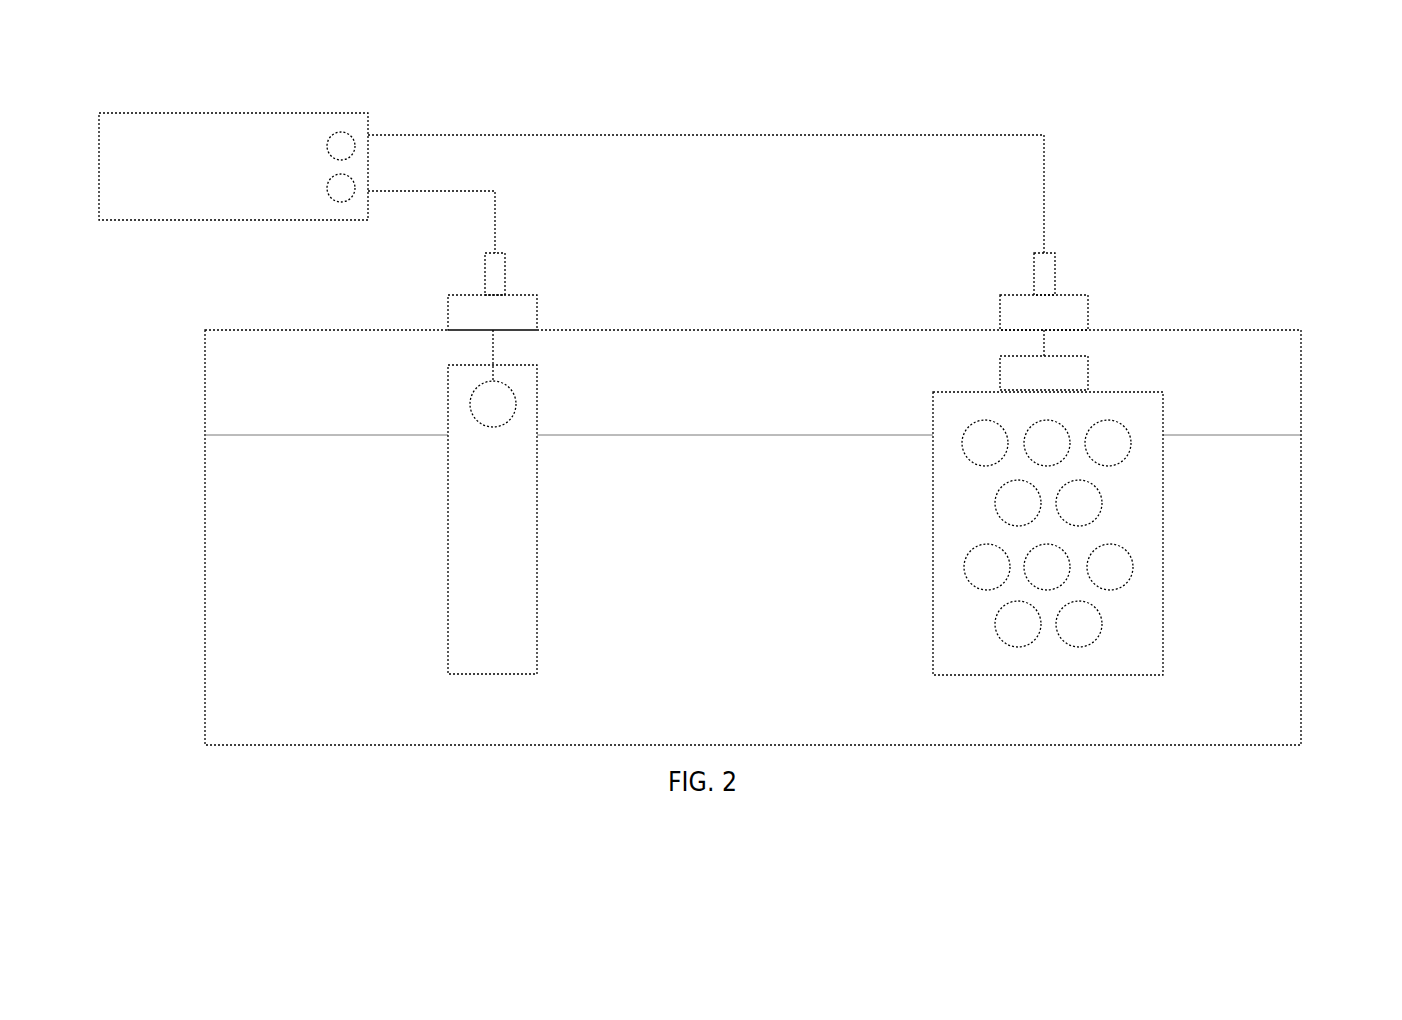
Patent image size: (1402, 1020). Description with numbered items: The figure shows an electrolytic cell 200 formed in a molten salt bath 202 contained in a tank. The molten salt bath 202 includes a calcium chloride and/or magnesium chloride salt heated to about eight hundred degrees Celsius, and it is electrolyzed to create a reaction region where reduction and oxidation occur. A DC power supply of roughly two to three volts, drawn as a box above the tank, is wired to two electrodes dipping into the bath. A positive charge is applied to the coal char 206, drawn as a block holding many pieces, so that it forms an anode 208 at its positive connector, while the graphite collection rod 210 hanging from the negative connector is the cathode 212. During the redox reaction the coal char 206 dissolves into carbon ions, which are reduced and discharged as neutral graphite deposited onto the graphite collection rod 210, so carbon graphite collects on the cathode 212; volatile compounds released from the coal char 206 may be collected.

The electrolytic cell 200 is at (235, 113).
The molten salt bath 202 is at (1301, 660).
The coal char 206 is at (1164, 530).
The anode 208 is at (1072, 293).
The graphite collection rod 210 is at (537, 520).
The cathode 212 is at (515, 293).